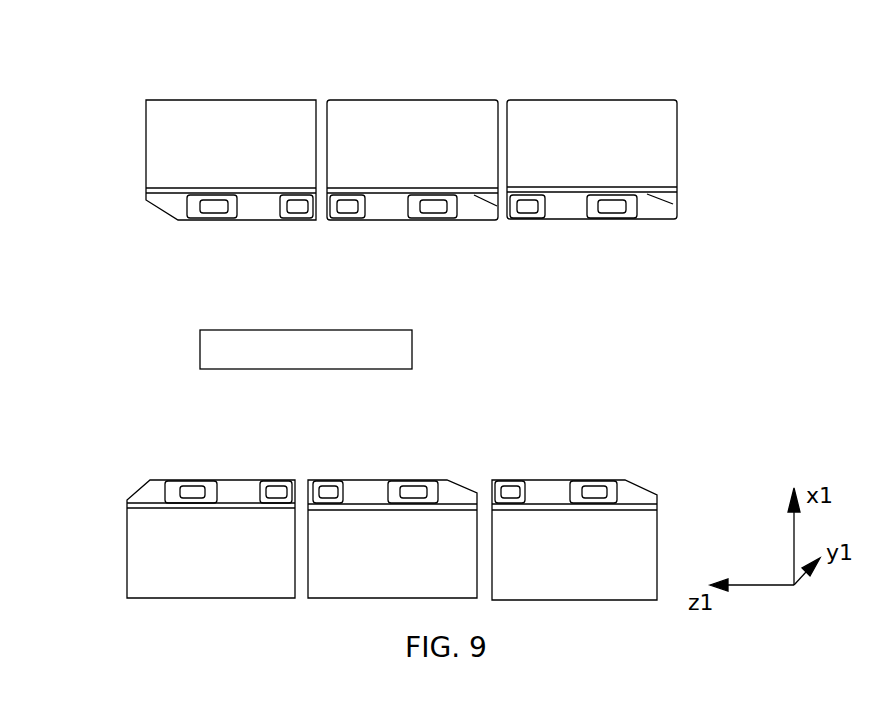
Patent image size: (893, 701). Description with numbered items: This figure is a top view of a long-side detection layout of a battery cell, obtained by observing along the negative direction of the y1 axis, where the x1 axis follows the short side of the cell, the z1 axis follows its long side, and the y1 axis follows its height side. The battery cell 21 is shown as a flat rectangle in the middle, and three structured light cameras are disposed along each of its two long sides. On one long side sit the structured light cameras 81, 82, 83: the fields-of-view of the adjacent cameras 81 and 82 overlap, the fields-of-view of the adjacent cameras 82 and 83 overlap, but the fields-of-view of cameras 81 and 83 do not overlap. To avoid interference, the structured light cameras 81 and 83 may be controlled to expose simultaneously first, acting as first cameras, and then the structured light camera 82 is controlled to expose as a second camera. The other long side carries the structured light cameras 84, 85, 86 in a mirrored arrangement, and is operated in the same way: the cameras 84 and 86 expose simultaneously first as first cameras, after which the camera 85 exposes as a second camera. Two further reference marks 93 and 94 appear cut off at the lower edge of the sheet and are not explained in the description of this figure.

The battery cell 21 is at (200, 330).
The structured light camera 81 is at (127, 480).
The structured light camera 82 is at (310, 481).
The structured light camera 83 is at (492, 487).
The structured light camera 84 is at (146, 100).
The structured light camera 85 is at (327, 100).
The structured light camera 86 is at (507, 100).
The component (partial) 93 is at (171, 700).
The component (partial) 94 is at (360, 700).